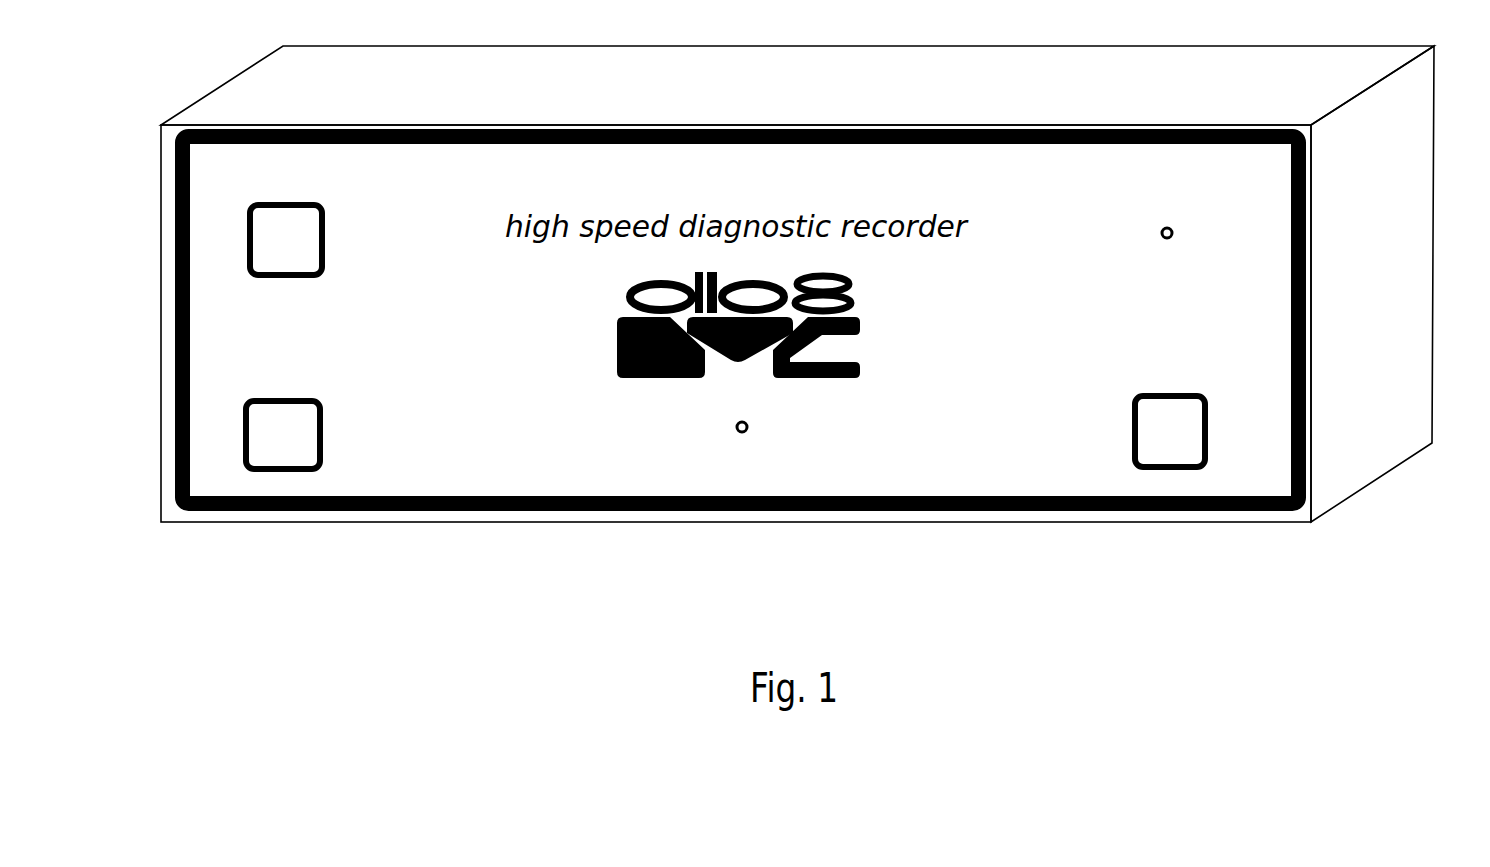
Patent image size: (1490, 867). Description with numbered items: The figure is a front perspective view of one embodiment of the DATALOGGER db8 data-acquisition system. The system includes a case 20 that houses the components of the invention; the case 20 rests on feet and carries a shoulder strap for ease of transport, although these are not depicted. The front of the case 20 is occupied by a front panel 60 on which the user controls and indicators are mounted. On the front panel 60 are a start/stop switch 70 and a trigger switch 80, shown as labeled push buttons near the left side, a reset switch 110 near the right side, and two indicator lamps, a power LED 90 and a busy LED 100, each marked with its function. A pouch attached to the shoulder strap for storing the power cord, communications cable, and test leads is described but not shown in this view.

The case 20 is at (1392, 303).
The front panel 60 is at (492, 453).
The start/stop switch 70 is at (272, 268).
The trigger switch 80 is at (273, 458).
The power LED 90 is at (1158, 236).
The busy LED 100 is at (733, 432).
The reset switch 110 is at (1153, 455).